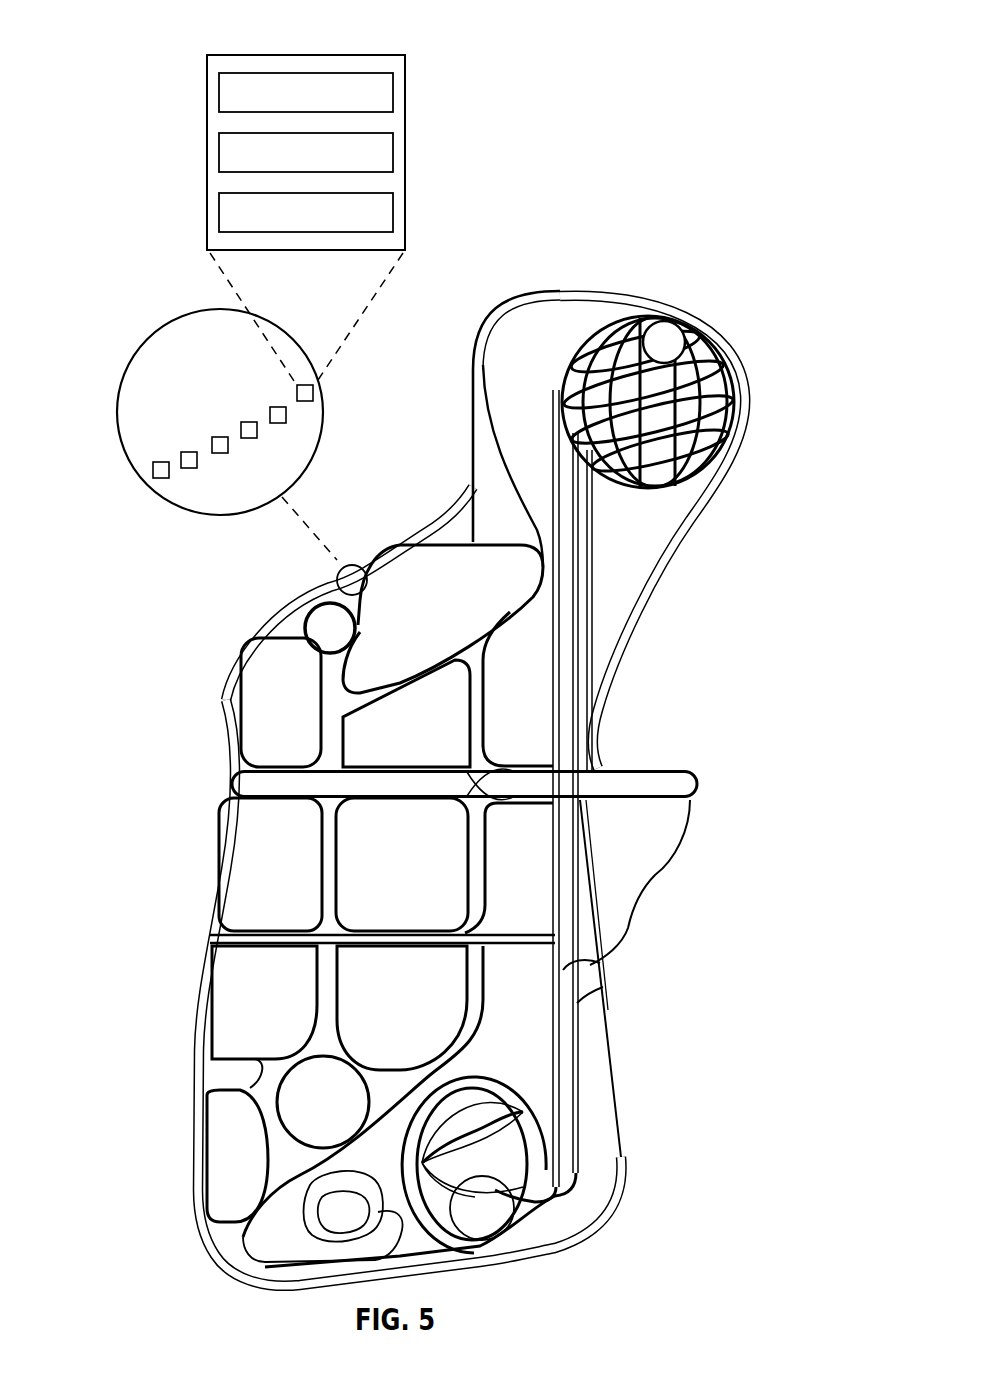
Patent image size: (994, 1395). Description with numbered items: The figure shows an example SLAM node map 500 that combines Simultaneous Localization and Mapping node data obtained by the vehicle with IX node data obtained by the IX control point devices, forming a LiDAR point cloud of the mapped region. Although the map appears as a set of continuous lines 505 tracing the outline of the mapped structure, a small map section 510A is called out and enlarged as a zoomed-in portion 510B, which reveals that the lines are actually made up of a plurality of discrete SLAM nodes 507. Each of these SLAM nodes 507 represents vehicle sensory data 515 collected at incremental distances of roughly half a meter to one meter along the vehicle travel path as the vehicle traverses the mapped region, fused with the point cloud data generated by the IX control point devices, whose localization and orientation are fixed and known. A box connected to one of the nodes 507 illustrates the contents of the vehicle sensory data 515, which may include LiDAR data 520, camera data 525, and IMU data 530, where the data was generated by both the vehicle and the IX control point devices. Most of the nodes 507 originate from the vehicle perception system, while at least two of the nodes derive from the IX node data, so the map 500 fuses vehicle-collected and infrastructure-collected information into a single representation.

The SLAM node map 500 is at (733, 265).
The continuous lines 505 is at (420, 541).
The SLAM nodes 507 is at (316, 393).
The map section 510A is at (338, 572).
The zoomed-in portion 510B is at (150, 335).
The vehicle sensory data 515 is at (273, 55).
The LiDAR data 520 is at (219, 93).
The camera data 525 is at (219, 153).
The IMU data 530 is at (219, 213).